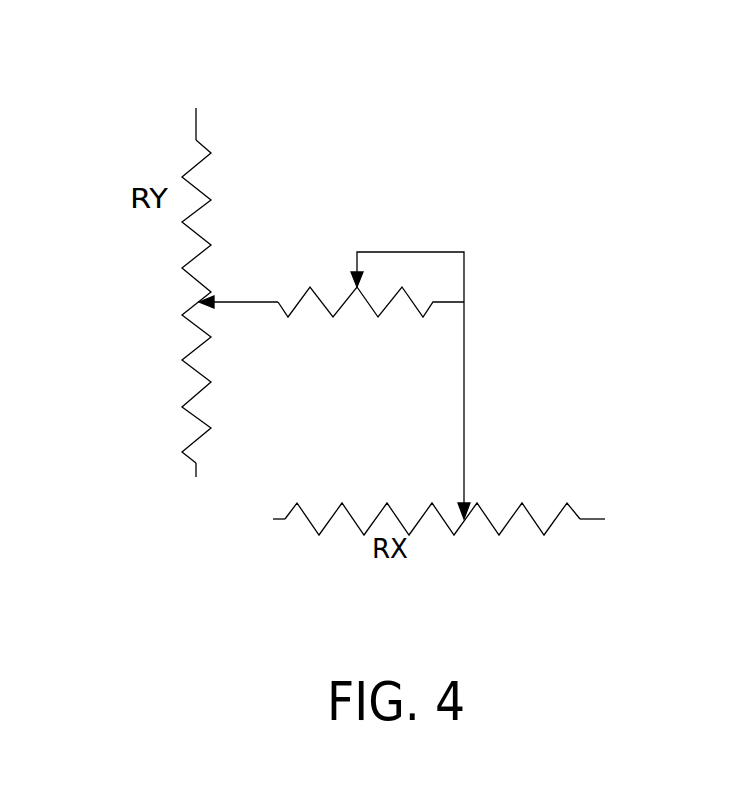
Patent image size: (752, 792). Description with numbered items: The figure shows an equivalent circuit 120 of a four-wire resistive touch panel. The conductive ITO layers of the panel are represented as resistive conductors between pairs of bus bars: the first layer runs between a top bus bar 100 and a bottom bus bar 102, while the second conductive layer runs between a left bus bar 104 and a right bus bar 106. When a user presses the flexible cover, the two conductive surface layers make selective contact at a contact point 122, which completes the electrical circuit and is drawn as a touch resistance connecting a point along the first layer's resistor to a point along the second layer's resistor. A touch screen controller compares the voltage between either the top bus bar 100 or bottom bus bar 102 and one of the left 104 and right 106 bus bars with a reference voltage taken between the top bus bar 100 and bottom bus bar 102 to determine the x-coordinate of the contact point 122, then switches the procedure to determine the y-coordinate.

The top bus bar 100 is at (167, 108).
The bottom bus bar 102 is at (138, 535).
The left bus bar 104 is at (248, 597).
The right bus bar 106 is at (562, 593).
The equivalent circuit 120 is at (524, 254).
The contact point 122 is at (468, 498).